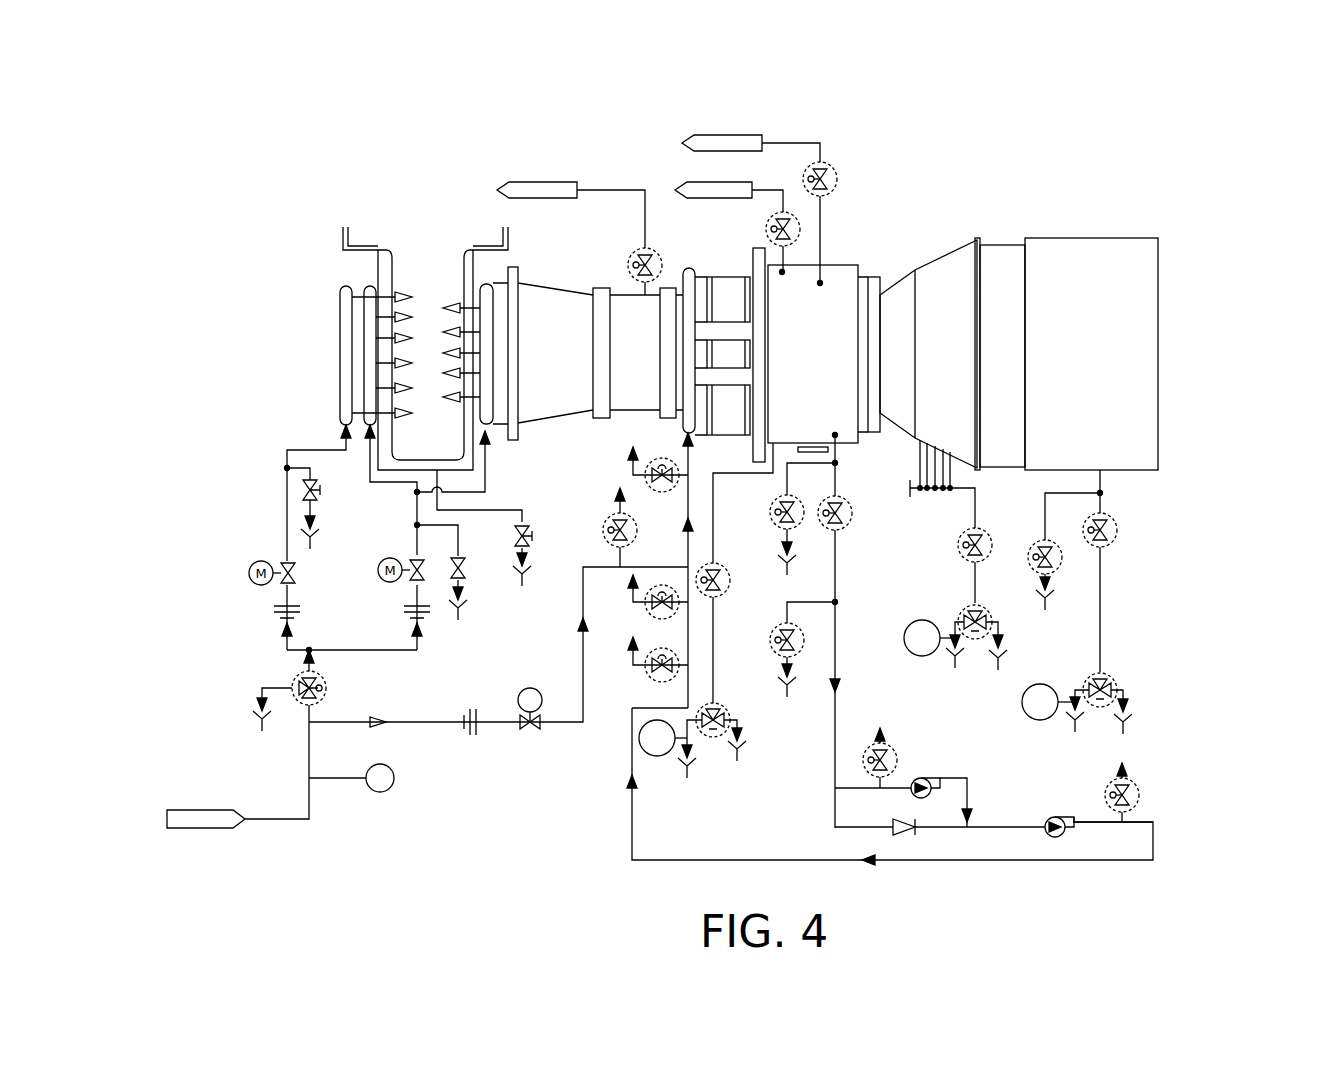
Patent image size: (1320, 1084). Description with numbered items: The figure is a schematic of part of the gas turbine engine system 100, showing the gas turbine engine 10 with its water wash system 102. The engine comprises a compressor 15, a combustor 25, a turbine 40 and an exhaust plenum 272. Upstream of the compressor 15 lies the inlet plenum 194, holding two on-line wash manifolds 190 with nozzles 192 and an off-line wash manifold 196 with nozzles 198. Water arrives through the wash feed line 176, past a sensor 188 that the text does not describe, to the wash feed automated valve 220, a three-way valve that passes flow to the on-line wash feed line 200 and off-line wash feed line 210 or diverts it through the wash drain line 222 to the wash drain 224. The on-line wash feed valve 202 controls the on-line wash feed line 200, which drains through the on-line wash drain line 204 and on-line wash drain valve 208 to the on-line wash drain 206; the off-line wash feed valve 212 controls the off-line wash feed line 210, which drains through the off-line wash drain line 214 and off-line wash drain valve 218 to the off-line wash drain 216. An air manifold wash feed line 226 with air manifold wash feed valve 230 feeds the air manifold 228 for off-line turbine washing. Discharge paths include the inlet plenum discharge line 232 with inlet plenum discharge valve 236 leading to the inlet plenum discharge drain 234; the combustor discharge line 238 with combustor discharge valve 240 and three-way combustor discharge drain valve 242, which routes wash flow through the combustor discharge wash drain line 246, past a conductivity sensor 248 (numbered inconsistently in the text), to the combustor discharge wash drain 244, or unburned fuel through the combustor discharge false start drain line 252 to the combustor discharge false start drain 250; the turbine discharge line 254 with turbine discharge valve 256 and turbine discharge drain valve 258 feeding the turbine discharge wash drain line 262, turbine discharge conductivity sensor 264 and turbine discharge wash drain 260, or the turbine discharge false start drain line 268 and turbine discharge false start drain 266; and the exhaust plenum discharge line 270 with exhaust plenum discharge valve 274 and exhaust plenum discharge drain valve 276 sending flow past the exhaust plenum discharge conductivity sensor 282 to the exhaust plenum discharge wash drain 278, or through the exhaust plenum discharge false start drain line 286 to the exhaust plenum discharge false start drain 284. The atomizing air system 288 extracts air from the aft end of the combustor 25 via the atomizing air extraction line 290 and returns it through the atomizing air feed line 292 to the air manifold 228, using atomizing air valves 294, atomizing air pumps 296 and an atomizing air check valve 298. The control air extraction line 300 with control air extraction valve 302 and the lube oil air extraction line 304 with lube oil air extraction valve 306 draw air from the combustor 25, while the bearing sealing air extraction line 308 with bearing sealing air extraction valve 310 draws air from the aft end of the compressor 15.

The gas turbine engine system 100 is at (262, 110).
The gas turbine engine 10 is at (935, 228).
The compressor 15 is at (570, 361).
The combustor 25 is at (822, 361).
The turbine 40 is at (957, 361).
The exhaust plenum 272 is at (1108, 361).
The water wash system 102 is at (263, 517).
The wash feed line 176 is at (292, 822).
The temperature sensor 188 is at (392, 788).
The on-line wash manifold 190 is at (400, 296).
The nozzles 192 is at (444, 304).
The gas turbine inlet plenum 194 is at (402, 270).
The off-line wash manifold 196 is at (338, 340).
The nozzles 198 is at (455, 326).
The on-line wash feed line 200 is at (420, 652).
The on-line wash feed valve 202 is at (390, 553).
The on-line wash drain line 204 is at (458, 530).
The on-line wash drain 206 is at (458, 620).
The on-line wash drain valve 208 is at (466, 598).
The off-line wash feed line 210 is at (287, 645).
The off-line wash feed valve 212 is at (262, 561).
The off-line wash drain line 214 is at (318, 482).
The off-line wash drain 216 is at (310, 555).
The off-line wash drain valve 218 is at (323, 492).
The wash feed automated valve 220 is at (327, 681).
The wash drain line 222 is at (261, 690).
The wash drain 224 is at (262, 730).
The air manifold wash feed line 226 is at (420, 725).
The air manifold 228 is at (690, 277).
The air manifold wash feed valve 230 is at (537, 729).
The inlet plenum discharge line 232 is at (483, 510).
The inlet plenum discharge drain 234 is at (524, 578).
The inlet plenum discharge valve 236 is at (534, 538).
The combustor discharge line 238 is at (713, 527).
The combustor discharge valve 240 is at (718, 597).
The combustor discharge drain valve 242 is at (722, 705).
The combustor discharge wash drain 244 is at (688, 784).
The combustor discharge wash drain line 246 is at (690, 727).
The conductivity sensor 248 is at (655, 757).
The combustor discharge false start drain 250 is at (738, 762).
The combustor discharge false start drain line 252 is at (740, 722).
The turbine discharge line 254 is at (978, 505).
The turbine discharge valve 256 is at (960, 545).
The turbine discharge drain valve 258 is at (966, 608).
The turbine discharge wash drain 260 is at (950, 672).
The turbine discharge wash drain line 262 is at (960, 620).
The turbine discharge conductivity sensor 264 is at (913, 654).
The turbine discharge false start drain 266 is at (999, 682).
The turbine discharge false start drain line 268 is at (1003, 628).
The exhaust plenum discharge line 270 is at (1105, 570).
The exhaust plenum discharge valve 274 is at (1115, 540).
The exhaust plenum discharge drain valve 276 is at (1110, 678).
The exhaust plenum discharge wash drain 278 is at (1075, 740).
The exhaust plenum discharge conductivity sensor 282 is at (1033, 719).
The exhaust plenum discharge false start drain 284 is at (1128, 740).
The exhaust plenum discharge false start drain line 286 is at (1133, 700).
The atomizing air system 288 is at (1175, 815).
The atomizing air extraction line 290 is at (838, 485).
The atomizing air feed line 292 is at (695, 464).
The atomizing air valves 294 is at (658, 460).
The atomizing air pumps 296 is at (911, 797).
The atomizing air check valves 298 is at (902, 836).
The control air extraction line 300 is at (822, 235).
The control air extraction valve 302 is at (833, 172).
The lube oil air extraction line 304 is at (780, 198).
The lube oil air extraction valve 306 is at (768, 230).
The bearing sealing air extraction line 308 is at (643, 200).
The bearing sealing air extraction valve 310 is at (640, 256).